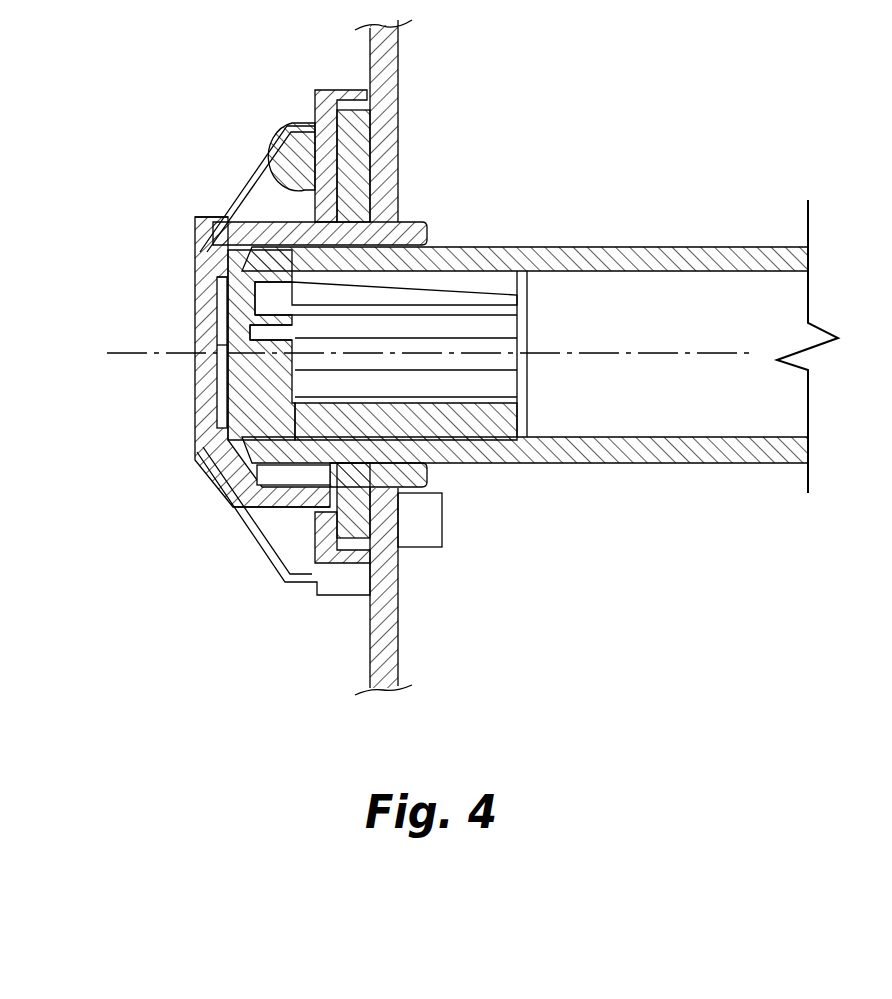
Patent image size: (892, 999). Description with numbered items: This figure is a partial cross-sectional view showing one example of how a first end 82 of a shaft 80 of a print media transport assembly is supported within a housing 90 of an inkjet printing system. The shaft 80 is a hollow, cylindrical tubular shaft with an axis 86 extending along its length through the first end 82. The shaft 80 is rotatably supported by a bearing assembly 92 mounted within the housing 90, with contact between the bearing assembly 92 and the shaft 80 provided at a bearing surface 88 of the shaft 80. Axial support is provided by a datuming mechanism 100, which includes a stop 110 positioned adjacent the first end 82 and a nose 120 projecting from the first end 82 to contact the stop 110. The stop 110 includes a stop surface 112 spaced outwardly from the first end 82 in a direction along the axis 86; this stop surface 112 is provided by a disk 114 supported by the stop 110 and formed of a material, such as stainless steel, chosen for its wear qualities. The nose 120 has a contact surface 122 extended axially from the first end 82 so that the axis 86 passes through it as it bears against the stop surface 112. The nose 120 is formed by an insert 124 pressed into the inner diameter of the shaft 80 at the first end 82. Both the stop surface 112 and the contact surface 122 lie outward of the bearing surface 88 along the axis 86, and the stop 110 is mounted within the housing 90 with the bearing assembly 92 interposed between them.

The shaft 80 is at (621, 247).
The first end 82 is at (223, 233).
The axis 86 is at (603, 352).
The bearing surface 88 is at (400, 227).
The housing 90 is at (392, 80).
The bearing assembly 92 is at (360, 230).
The datuming mechanism 100 is at (150, 447).
The stop 110 is at (175, 310).
The stop surface 112 is at (290, 383).
The disk 114 is at (231, 252).
The nose 120 is at (206, 372).
The contact surface 122 is at (227, 345).
The insert 124 is at (212, 485).